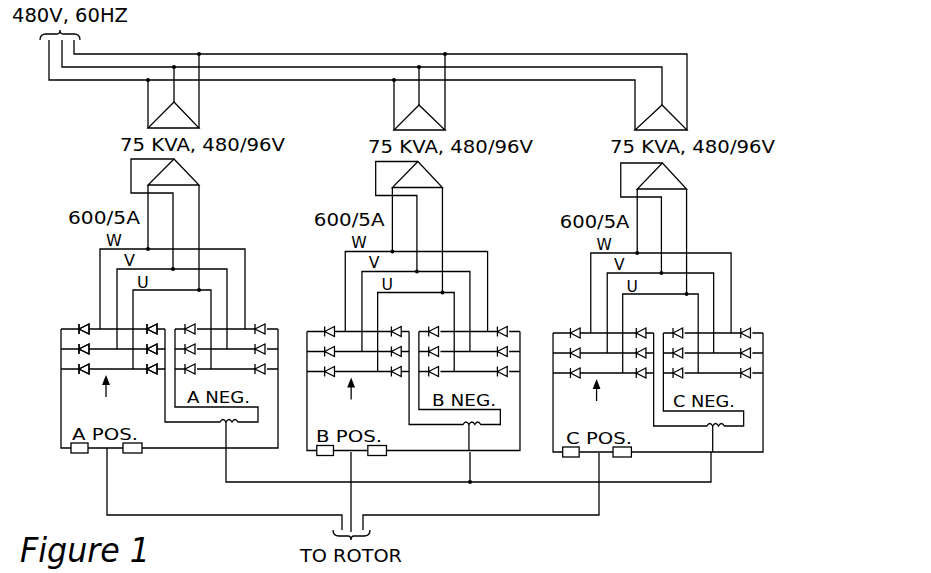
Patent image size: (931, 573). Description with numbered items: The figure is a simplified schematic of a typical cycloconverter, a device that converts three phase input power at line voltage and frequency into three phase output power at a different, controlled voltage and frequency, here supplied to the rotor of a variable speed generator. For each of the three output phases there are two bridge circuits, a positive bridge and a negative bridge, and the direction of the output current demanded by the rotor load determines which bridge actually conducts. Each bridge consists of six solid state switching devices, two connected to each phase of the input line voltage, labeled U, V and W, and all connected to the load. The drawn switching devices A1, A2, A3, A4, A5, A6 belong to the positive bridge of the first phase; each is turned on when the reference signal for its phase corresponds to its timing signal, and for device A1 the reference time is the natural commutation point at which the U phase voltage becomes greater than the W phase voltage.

The switching device A1 is at (78, 372).
The switching device A2 is at (150, 327).
The switching device A3 is at (79, 350).
The switching device A4 is at (149, 371).
The switching device A5 is at (80, 326).
The switching device A6 is at (162, 348).